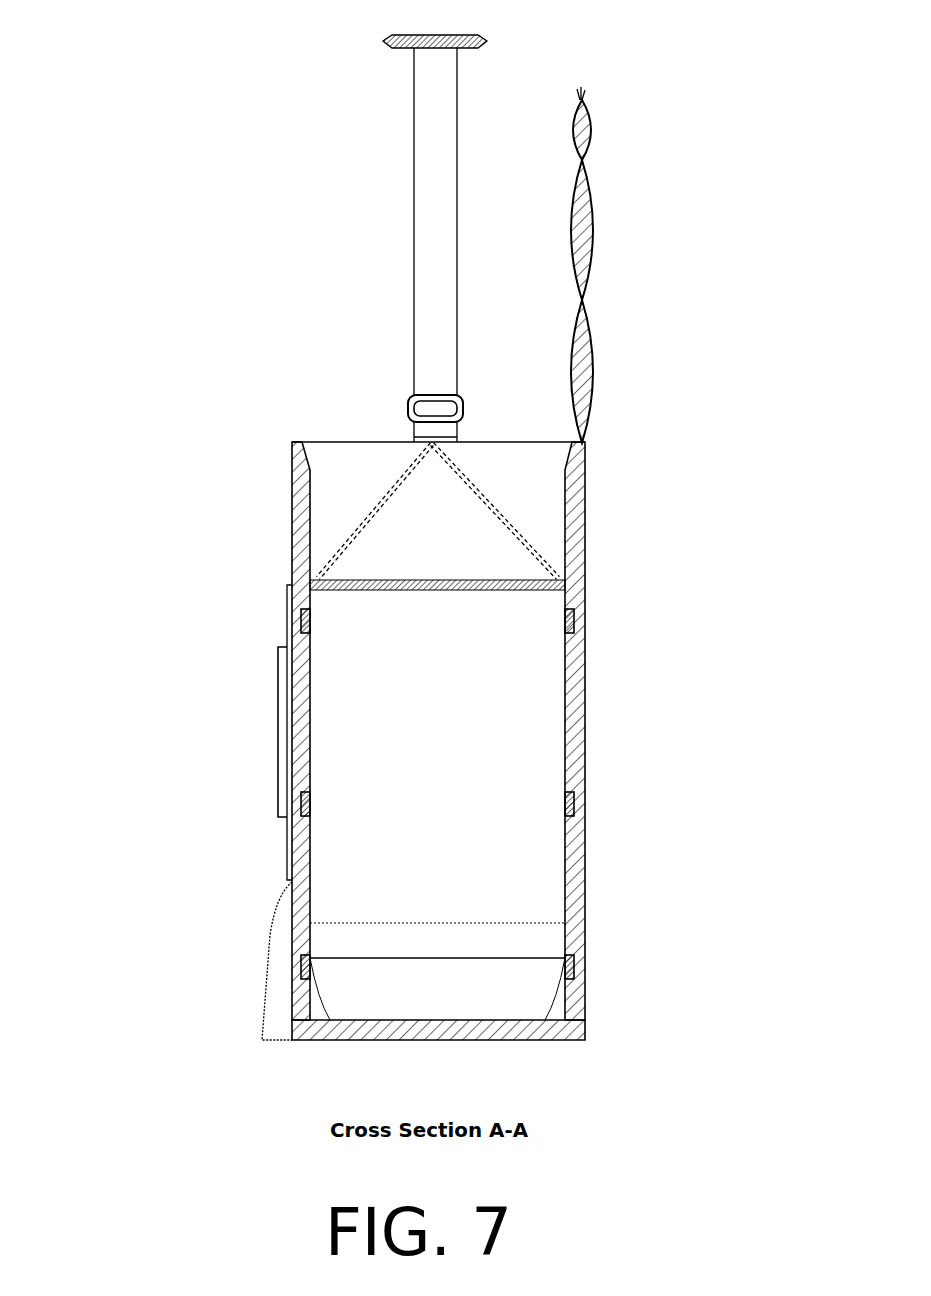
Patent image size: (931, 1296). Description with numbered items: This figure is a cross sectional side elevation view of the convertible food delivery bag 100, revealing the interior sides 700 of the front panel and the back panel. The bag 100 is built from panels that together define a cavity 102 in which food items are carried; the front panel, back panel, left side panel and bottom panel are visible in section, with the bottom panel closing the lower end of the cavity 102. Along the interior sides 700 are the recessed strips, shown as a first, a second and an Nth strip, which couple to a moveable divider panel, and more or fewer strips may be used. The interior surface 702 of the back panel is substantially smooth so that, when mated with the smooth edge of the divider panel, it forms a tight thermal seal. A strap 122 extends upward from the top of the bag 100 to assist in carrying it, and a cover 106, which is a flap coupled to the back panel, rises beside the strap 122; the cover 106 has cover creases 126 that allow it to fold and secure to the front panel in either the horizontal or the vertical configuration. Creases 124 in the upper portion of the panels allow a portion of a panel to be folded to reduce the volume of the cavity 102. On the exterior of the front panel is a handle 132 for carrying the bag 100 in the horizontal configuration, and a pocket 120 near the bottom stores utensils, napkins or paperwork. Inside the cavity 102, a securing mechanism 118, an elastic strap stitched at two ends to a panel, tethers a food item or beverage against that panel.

The interior sides 700 is at (248, 38).
The convertible food delivery bag 100 is at (248, 397).
The strap 122 is at (412, 245).
The cover 106 is at (594, 233).
The cover creases 126 is at (592, 153).
The creases 124 is at (337, 578).
The cavity 102 is at (350, 663).
The interior surface of the back panel 702 is at (552, 963).
The handle 132 is at (283, 742).
The pocket 120 is at (265, 1003).
The securing mechanism 118 is at (528, 928).